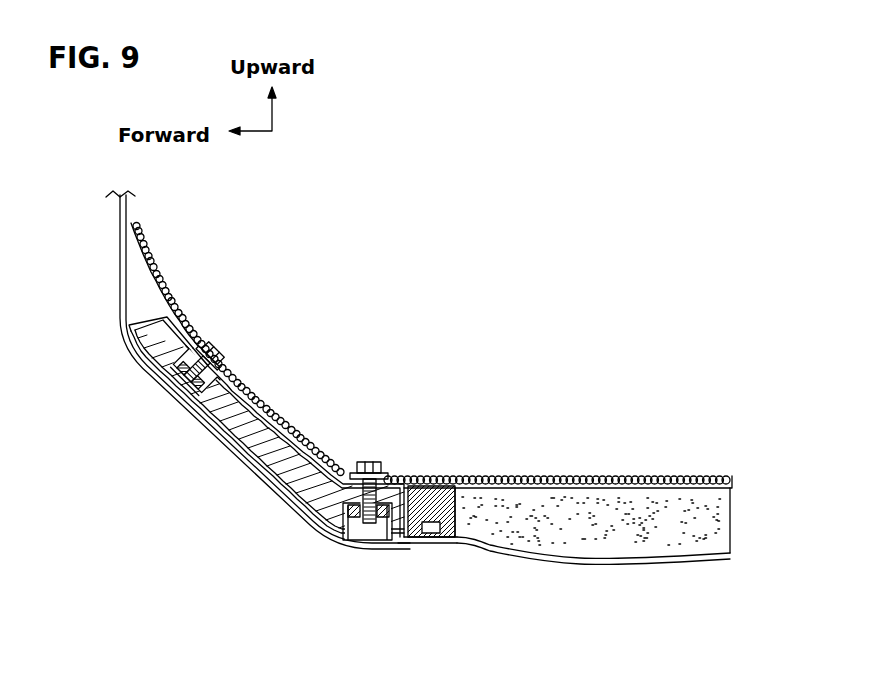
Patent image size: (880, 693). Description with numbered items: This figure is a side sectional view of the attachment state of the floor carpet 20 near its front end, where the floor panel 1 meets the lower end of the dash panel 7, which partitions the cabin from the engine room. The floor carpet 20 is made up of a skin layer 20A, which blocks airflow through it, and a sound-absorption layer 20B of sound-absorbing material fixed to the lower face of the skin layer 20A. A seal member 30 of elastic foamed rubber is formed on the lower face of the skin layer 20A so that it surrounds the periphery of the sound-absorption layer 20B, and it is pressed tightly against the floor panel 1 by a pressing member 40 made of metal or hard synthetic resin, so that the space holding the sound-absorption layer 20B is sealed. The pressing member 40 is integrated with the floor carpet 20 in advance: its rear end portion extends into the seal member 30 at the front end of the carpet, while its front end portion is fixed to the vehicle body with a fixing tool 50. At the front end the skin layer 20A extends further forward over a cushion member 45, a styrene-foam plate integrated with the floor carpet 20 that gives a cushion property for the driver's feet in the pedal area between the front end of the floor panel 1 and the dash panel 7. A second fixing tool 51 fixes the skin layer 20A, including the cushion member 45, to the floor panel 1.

The floor panel 1 is at (622, 562).
The dash panel 7 is at (121, 271).
The floor carpet 20 is at (431, 388).
The skin layer 20A is at (565, 477).
The sound-absorption layer 20B is at (631, 526).
The seal member 30 is at (430, 544).
The pressing member 40 is at (409, 485).
The cushion member 45 is at (287, 468).
The fixing tool 50 is at (370, 461).
The fixing tool 51 is at (223, 346).